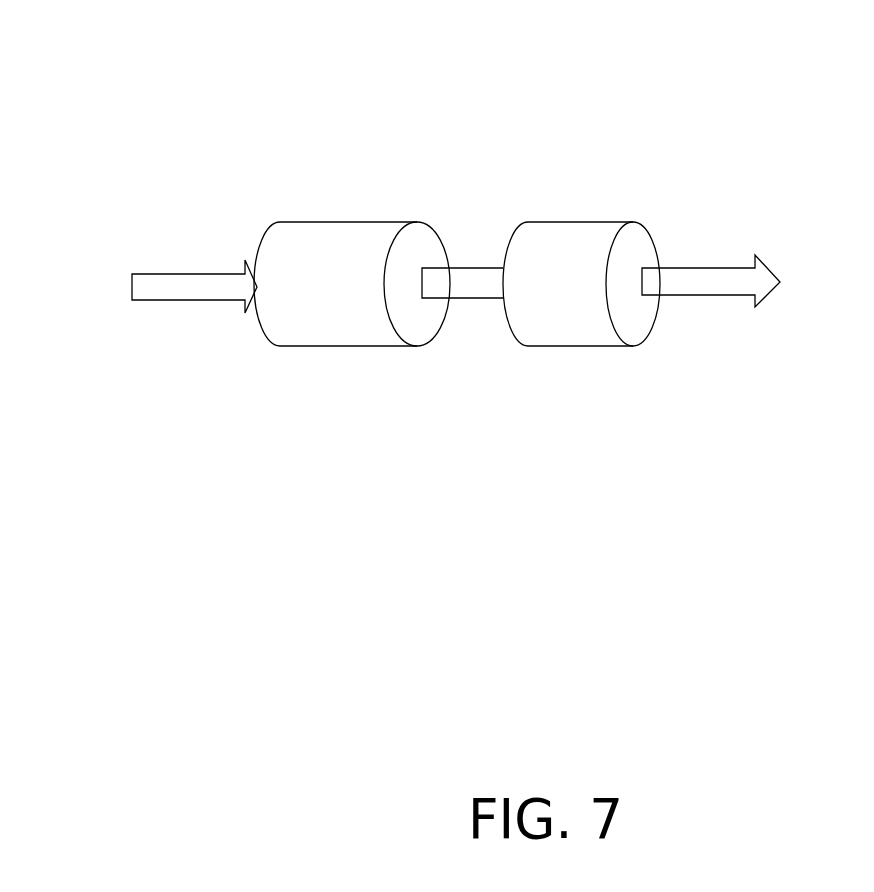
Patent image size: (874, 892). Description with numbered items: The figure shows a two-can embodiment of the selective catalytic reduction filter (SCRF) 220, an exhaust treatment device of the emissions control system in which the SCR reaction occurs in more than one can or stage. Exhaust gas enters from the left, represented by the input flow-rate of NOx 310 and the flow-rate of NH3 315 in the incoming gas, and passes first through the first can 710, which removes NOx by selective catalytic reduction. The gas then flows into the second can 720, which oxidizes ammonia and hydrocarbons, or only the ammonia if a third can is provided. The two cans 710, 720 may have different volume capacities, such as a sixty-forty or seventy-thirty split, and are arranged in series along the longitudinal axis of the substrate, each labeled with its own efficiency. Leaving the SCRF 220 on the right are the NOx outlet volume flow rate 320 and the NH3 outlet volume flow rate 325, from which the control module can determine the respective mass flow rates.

The selective catalytic reduction filter (SCRF) 220 is at (240, 94).
The input flow-rate of NOx 310 is at (159, 283).
The flow-rate of NH3 315 is at (159, 289).
The NOx outlet volume flow rate 320 is at (741, 284).
The NH3 outlet volume flow rate 325 is at (739, 293).
The first can 710 is at (352, 337).
The second can 720 is at (580, 337).